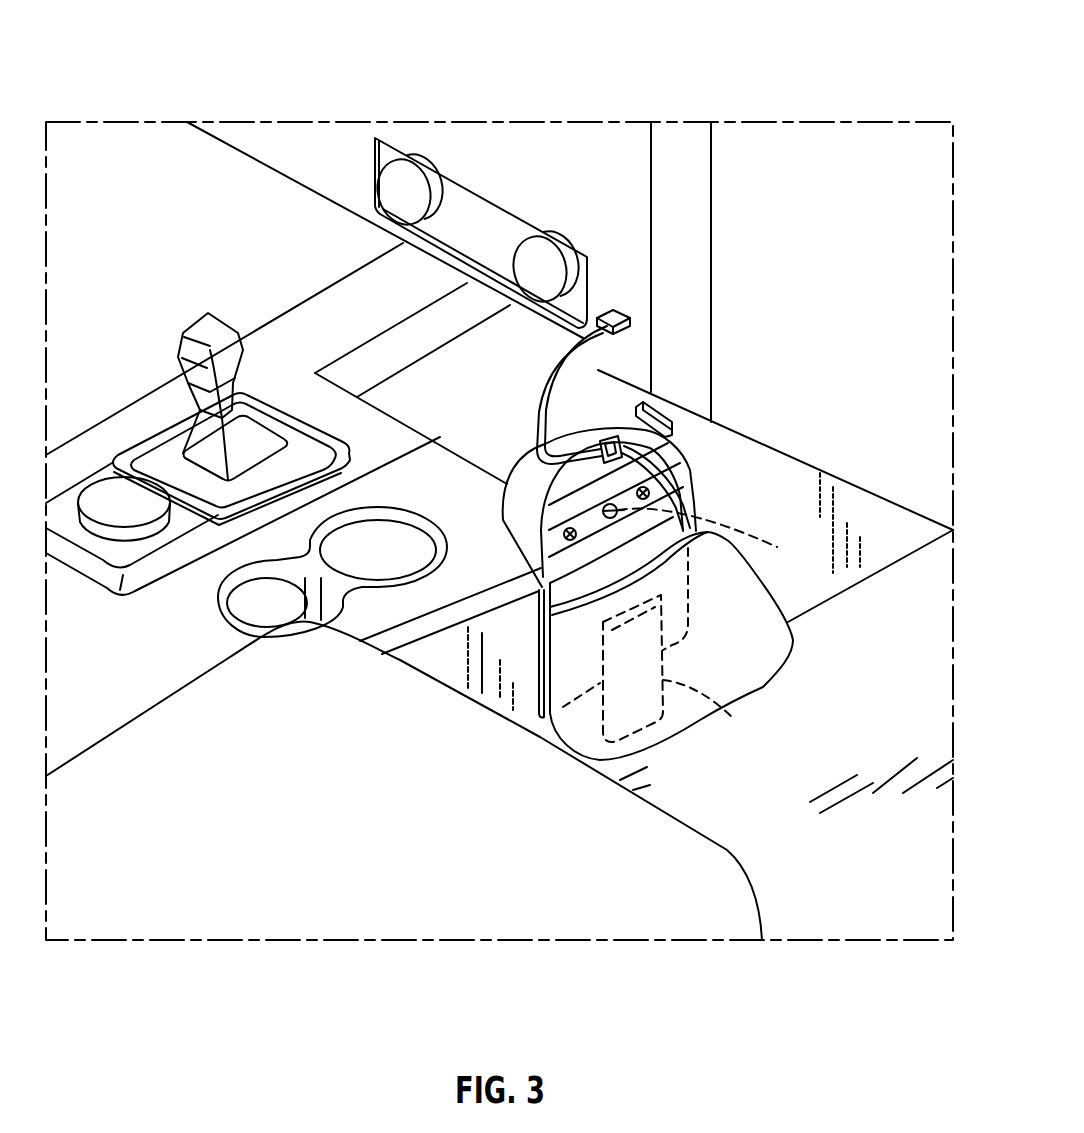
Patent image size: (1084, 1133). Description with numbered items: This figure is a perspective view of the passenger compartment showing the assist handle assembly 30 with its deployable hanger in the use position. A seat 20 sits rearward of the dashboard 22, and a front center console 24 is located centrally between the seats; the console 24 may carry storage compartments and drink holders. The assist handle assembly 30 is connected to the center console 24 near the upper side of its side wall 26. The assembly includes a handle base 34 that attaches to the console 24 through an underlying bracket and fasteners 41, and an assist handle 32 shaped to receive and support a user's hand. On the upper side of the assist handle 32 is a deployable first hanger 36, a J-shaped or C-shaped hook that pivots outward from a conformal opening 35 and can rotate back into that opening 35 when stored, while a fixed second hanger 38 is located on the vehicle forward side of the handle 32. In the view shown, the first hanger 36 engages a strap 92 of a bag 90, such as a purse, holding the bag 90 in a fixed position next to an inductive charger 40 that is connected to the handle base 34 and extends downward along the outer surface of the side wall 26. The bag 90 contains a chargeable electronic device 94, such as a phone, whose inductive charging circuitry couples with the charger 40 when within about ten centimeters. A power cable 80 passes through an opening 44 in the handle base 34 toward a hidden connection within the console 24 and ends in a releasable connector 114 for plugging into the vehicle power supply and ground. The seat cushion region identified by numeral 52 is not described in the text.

The seat 20 is at (690, 868).
The dashboard 22 is at (460, 157).
The center console 24 is at (390, 457).
The side wall 26 is at (838, 516).
The assist handle assembly 30 is at (619, 392).
The assist handle 32 is at (547, 487).
The handle base 34 is at (668, 482).
The opening 35 is at (608, 442).
The deployable first hanger 36 is at (600, 430).
The fixed second hanger 38 is at (656, 402).
The inductive charger 40 is at (688, 597).
The fasteners 41 is at (651, 488).
The opening 44 is at (712, 534).
The seat cushion 52 is at (833, 787).
The power cable 80 is at (557, 352).
The bag 90 is at (794, 586).
The strap 92 is at (603, 590).
The chargeable electronic device 94 is at (735, 720).
The releasable connector 114 is at (617, 316).